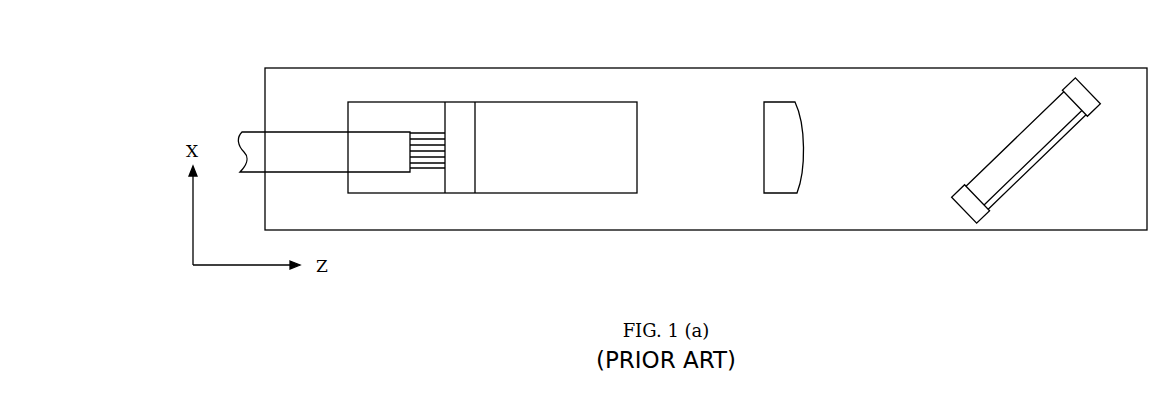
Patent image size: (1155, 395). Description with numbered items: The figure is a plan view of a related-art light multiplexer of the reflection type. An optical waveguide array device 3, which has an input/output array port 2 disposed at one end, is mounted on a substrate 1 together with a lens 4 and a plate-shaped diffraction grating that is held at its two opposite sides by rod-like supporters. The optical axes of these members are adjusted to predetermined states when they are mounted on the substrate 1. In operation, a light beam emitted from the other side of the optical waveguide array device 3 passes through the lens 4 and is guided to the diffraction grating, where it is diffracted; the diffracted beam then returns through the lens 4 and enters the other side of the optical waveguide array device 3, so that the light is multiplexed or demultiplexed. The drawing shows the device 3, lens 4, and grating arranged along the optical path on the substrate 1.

The substrate 1 is at (320, 68).
The input/output array port 2 is at (252, 132).
The optical waveguide array device 3 is at (583, 102).
The lens 4 is at (776, 102).